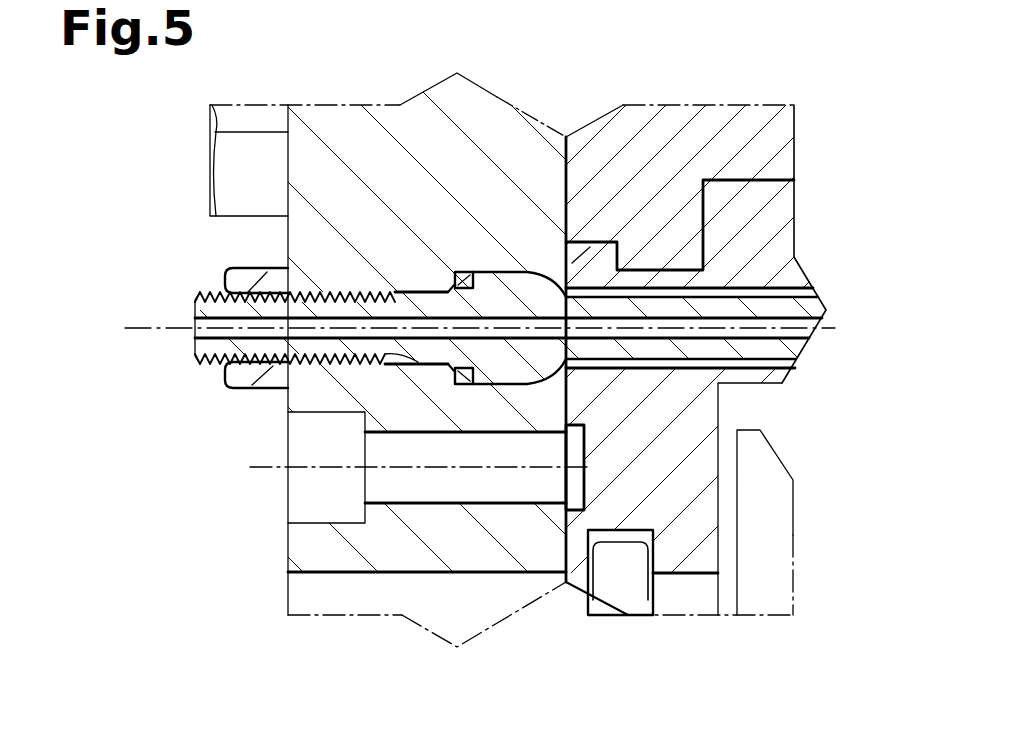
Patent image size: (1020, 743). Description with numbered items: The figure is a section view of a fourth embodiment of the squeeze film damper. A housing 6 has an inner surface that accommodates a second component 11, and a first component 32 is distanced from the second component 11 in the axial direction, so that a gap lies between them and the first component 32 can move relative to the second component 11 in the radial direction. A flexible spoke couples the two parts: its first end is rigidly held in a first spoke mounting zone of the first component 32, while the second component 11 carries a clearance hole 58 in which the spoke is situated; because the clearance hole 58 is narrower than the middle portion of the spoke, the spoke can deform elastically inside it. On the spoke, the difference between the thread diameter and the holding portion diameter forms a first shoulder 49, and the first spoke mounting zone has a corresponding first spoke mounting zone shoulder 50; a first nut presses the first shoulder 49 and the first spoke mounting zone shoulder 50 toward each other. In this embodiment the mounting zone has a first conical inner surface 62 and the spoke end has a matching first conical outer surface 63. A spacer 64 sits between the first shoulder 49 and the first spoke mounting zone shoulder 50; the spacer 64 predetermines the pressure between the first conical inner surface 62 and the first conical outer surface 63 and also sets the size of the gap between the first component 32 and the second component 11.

The housing 6 is at (676, 117).
The second component 11 is at (778, 233).
The first component 32 is at (343, 145).
The first shoulder 49 is at (462, 386).
The first spoke mounting zone shoulder 50 is at (468, 278).
The clearance hole 58 is at (740, 293).
The first conical inner surface 62 is at (228, 365).
The first conical outer surface 63 is at (405, 365).
The spacer 64 is at (458, 382).